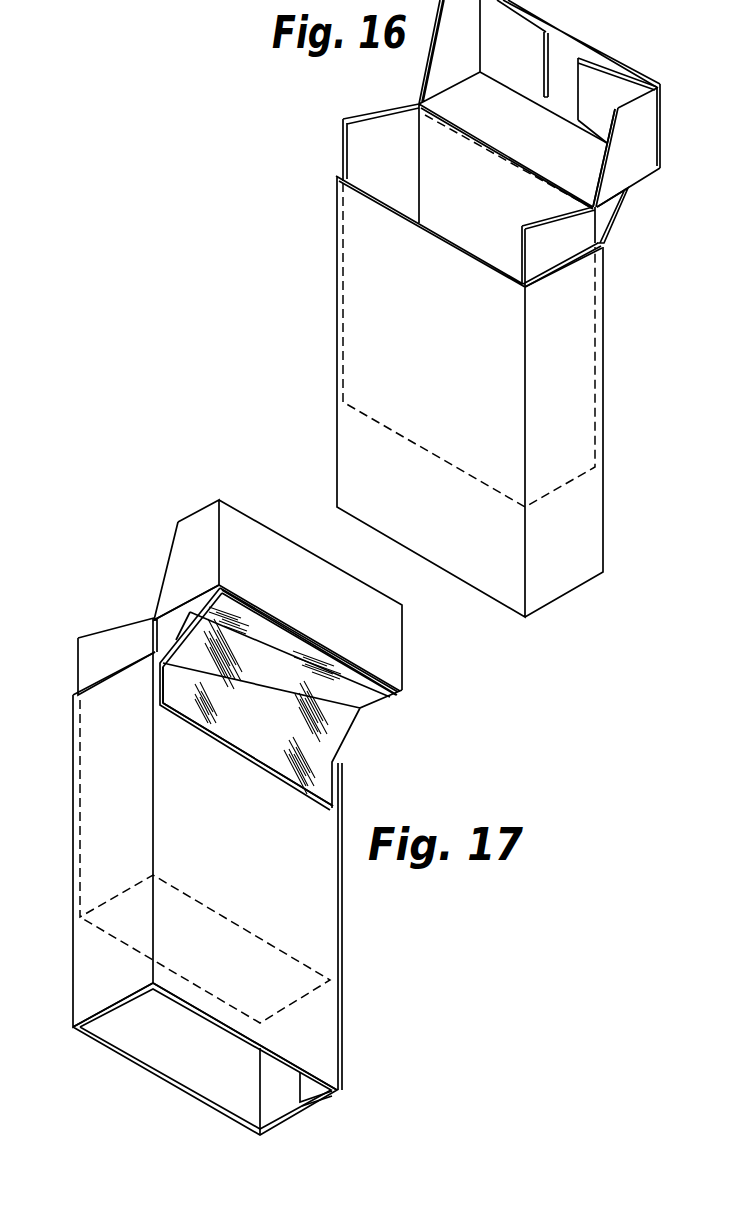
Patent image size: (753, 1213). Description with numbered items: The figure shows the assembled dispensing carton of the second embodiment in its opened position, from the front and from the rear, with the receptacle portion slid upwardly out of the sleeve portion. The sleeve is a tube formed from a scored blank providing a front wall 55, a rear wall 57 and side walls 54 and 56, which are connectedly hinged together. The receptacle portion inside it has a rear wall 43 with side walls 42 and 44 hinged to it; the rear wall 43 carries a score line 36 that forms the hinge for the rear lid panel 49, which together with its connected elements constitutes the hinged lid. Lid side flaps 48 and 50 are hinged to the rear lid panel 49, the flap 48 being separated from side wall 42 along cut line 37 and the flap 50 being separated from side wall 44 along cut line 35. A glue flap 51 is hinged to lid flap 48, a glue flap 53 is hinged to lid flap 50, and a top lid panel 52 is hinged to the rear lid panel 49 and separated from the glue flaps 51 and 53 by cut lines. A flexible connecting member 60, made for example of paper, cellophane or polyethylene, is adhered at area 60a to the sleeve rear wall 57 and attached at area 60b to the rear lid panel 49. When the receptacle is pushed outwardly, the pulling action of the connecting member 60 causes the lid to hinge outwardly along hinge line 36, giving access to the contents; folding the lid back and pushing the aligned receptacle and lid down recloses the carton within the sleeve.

In FIG. 16, the cut line 35 is at (603, 160).
In FIG. 16, the score line 36 is at (443, 118).
In FIG. 16, the cut line 37 is at (423, 72).
In FIG. 16, the side wall 42 is at (395, 177).
In FIG. 16, the rear wall 43 is at (485, 201).
In FIG. 17, the rear wall 43 is at (163, 638).
In FIG. 16, the side wall 44 is at (562, 257).
In FIG. 17, the side wall 44 is at (110, 670).
In FIG. 16, the lid side flap 48 is at (467, 58).
In FIG. 16, the rear lid panel 49 is at (538, 145).
In FIG. 17, the rear lid panel 49 is at (180, 617).
In FIG. 16, the lid side flap 50 is at (648, 158).
In FIG. 17, the lid side flap 50 is at (200, 560).
In FIG. 16, the glue flap 51 is at (518, 58).
In FIG. 16, the top lid panel 52 is at (550, 83).
In FIG. 17, the top lid panel 52 is at (297, 593).
In FIG. 16, the glue flap 53 is at (611, 105).
In FIG. 17, the side wall 54 is at (277, 1070).
In FIG. 16, the front wall 55 is at (440, 348).
In FIG. 17, the front wall 55 is at (180, 1050).
In FIG. 16, the side wall 56 is at (570, 387).
In FIG. 17, the side wall 56 is at (117, 978).
In FIG. 17, the rear wall 57 is at (235, 875).
In FIG. 16, the flexible connecting member 60 is at (637, 223).
In FIG. 17, the flexible connecting member 60 is at (328, 727).
In FIG. 17, the adhered area of connecting member 60a is at (275, 753).
In FIG. 17, the attached area of connecting member 60b is at (322, 667).